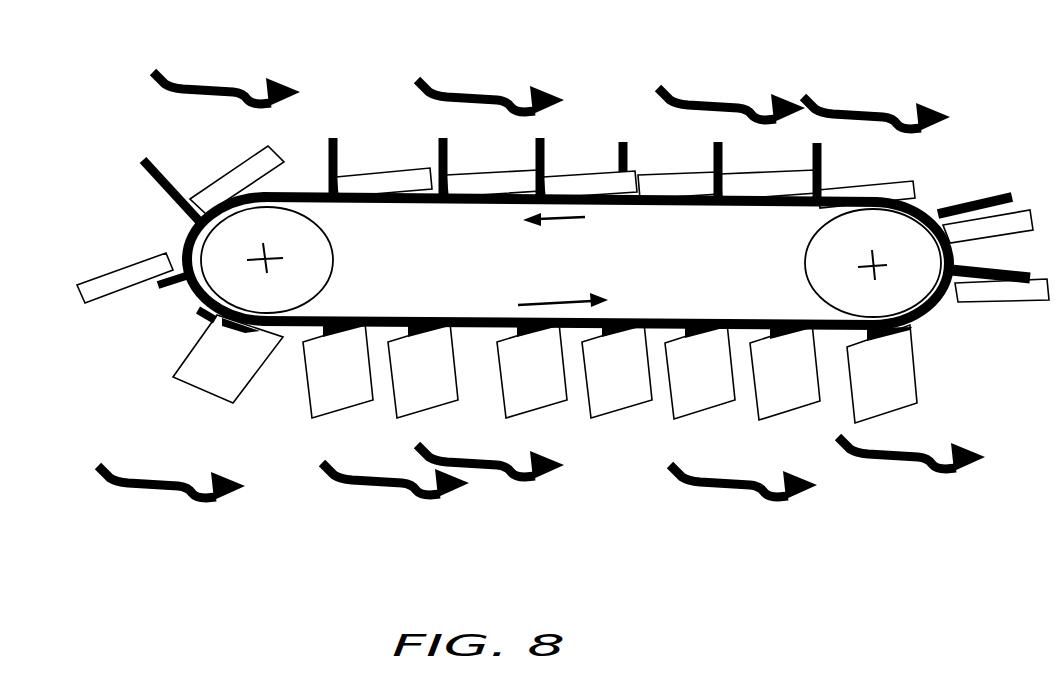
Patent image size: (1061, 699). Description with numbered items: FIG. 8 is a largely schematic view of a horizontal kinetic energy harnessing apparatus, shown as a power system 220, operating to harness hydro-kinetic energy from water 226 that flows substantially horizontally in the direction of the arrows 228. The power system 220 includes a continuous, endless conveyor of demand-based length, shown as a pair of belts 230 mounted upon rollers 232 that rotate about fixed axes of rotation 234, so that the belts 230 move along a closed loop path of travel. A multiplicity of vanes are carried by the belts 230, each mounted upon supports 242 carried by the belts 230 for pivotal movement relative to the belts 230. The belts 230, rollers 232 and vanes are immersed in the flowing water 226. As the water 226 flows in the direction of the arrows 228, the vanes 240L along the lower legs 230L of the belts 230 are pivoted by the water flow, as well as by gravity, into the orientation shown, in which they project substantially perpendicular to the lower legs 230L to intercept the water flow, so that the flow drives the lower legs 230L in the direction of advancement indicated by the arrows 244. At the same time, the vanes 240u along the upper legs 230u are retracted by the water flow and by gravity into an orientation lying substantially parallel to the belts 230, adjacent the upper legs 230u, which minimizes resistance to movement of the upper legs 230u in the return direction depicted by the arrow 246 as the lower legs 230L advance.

The power system 220 is at (537, 259).
The water 226 is at (508, 559).
The arrows 228 is at (468, 86).
The belts 230 is at (473, 203).
The upper legs 230u is at (645, 206).
The lower legs 230L is at (655, 318).
The rollers 232 is at (305, 283).
The fixed axes of rotation 234 is at (268, 260).
The vanes along upper legs 240u is at (668, 182).
The vanes along lower legs 240L is at (538, 397).
The supports 242 is at (338, 165).
The arrows 244 is at (562, 297).
The arrow 246 is at (567, 220).